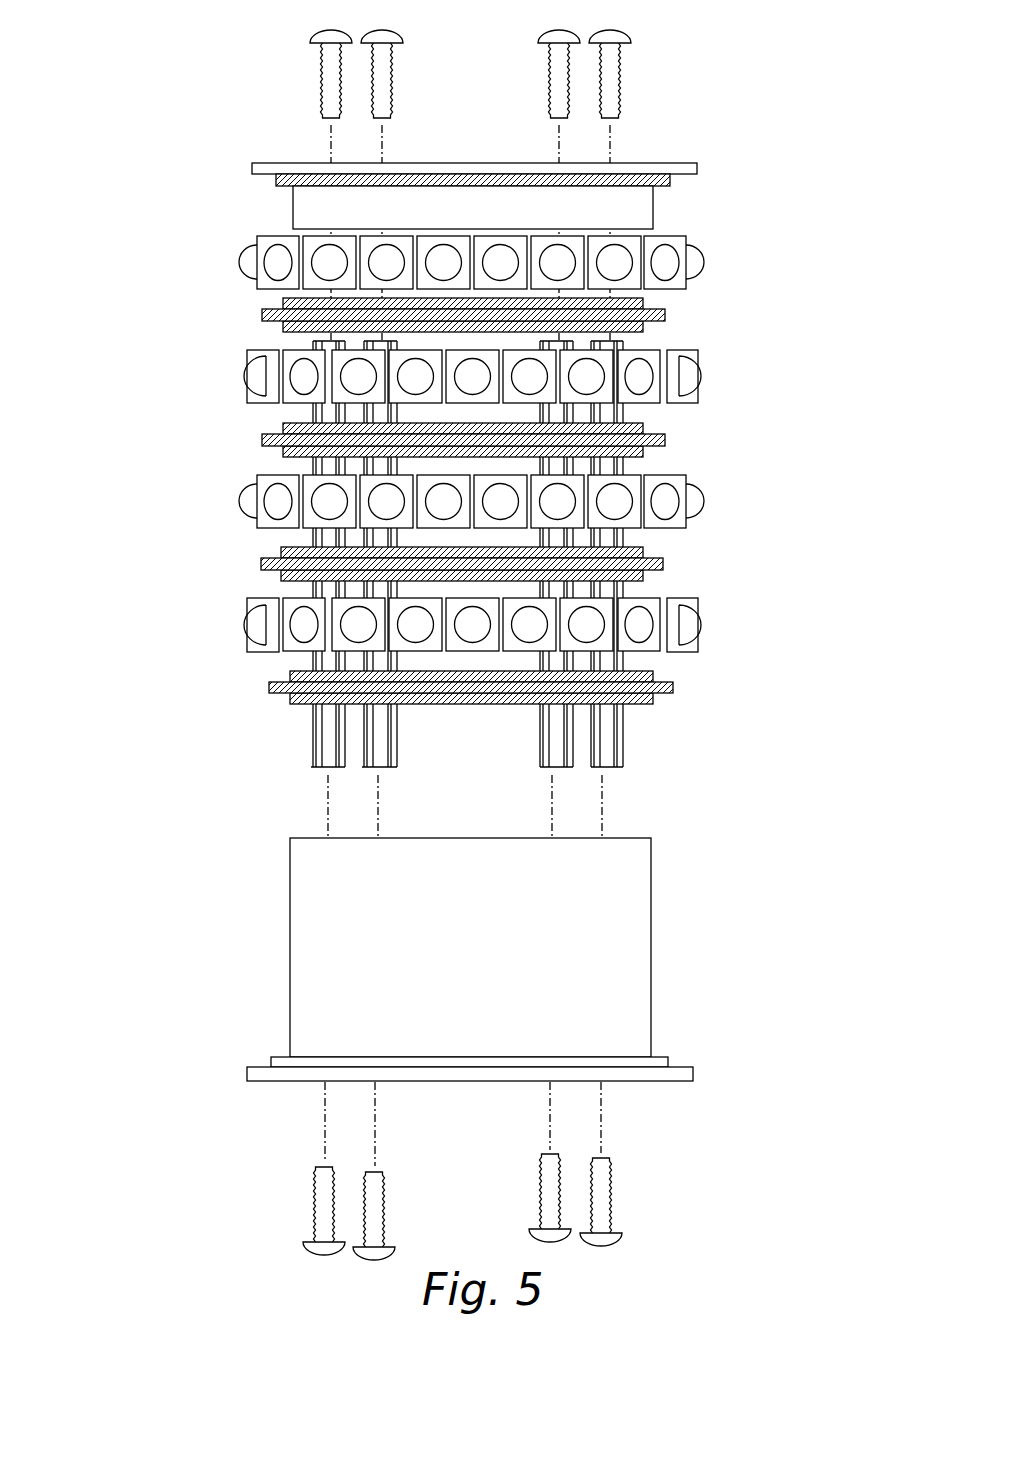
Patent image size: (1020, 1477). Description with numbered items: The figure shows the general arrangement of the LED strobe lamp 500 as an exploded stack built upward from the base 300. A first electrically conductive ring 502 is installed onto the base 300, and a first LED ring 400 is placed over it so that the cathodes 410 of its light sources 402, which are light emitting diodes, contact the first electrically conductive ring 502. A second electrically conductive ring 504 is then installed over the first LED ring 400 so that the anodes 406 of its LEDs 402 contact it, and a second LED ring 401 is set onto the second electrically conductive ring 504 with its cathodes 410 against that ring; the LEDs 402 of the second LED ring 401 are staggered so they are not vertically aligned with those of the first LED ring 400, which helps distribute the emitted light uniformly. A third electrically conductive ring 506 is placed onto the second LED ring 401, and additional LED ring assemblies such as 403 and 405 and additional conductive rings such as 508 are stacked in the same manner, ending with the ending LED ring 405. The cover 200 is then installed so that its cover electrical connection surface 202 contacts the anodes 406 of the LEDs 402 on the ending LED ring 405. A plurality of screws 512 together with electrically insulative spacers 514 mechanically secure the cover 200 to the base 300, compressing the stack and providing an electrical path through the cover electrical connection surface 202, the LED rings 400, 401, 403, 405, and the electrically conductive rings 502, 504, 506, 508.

The LED strobe lamp 500 is at (467, 645).
The screws 512 is at (323, 103).
The cover 200 is at (697, 167).
The cover electrical connection surface 202 is at (667, 188).
The anodes 406 is at (273, 236).
The light sources 402 is at (461, 408).
The ending LED ring 405 is at (742, 268).
The additional LED ring 403 is at (202, 380).
The second LED ring 401 is at (745, 510).
The first LED ring 400 is at (215, 630).
The cathodes 410 is at (670, 293).
The additional electrically conductive ring 508 is at (262, 314).
The third electrically conductive ring 506 is at (665, 443).
The second electrically conductive ring 504 is at (262, 562).
The first electrically conductive ring 502 is at (270, 690).
The electrically insulative spacers 514 is at (307, 760).
The base 300 is at (651, 955).